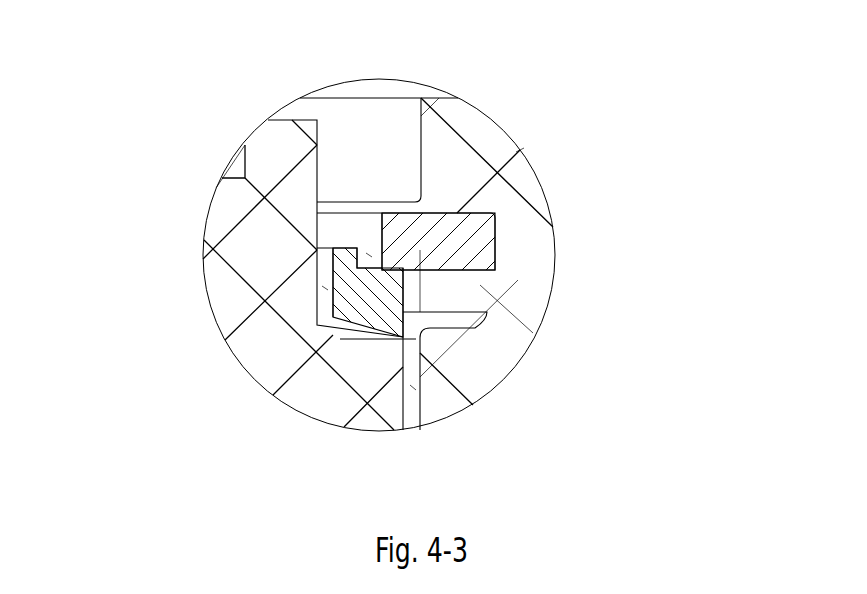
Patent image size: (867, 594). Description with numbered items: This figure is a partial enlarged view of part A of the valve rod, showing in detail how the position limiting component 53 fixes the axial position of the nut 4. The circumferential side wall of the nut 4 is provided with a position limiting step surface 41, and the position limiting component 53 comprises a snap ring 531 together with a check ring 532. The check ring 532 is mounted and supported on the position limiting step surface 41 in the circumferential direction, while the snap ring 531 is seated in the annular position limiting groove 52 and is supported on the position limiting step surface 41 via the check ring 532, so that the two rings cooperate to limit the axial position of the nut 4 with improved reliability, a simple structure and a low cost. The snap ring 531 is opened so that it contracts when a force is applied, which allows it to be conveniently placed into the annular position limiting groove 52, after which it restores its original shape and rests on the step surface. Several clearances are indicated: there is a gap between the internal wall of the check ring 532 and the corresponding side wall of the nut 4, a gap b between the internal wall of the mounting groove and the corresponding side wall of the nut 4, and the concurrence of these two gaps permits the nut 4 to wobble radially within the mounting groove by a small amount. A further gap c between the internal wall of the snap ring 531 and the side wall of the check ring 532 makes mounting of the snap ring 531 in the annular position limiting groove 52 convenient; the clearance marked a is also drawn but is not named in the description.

The nut 4 is at (253, 227).
The position limiting step surface 41 is at (403, 349).
The annular position limiting groove 52 is at (475, 296).
The position limiting component 53 is at (511, 240).
The snap ring 531 is at (442, 233).
The check ring 532 is at (377, 300).
The part A is at (522, 150).
The clearance a is at (325, 288).
The gap b is at (413, 388).
The gap c is at (370, 255).